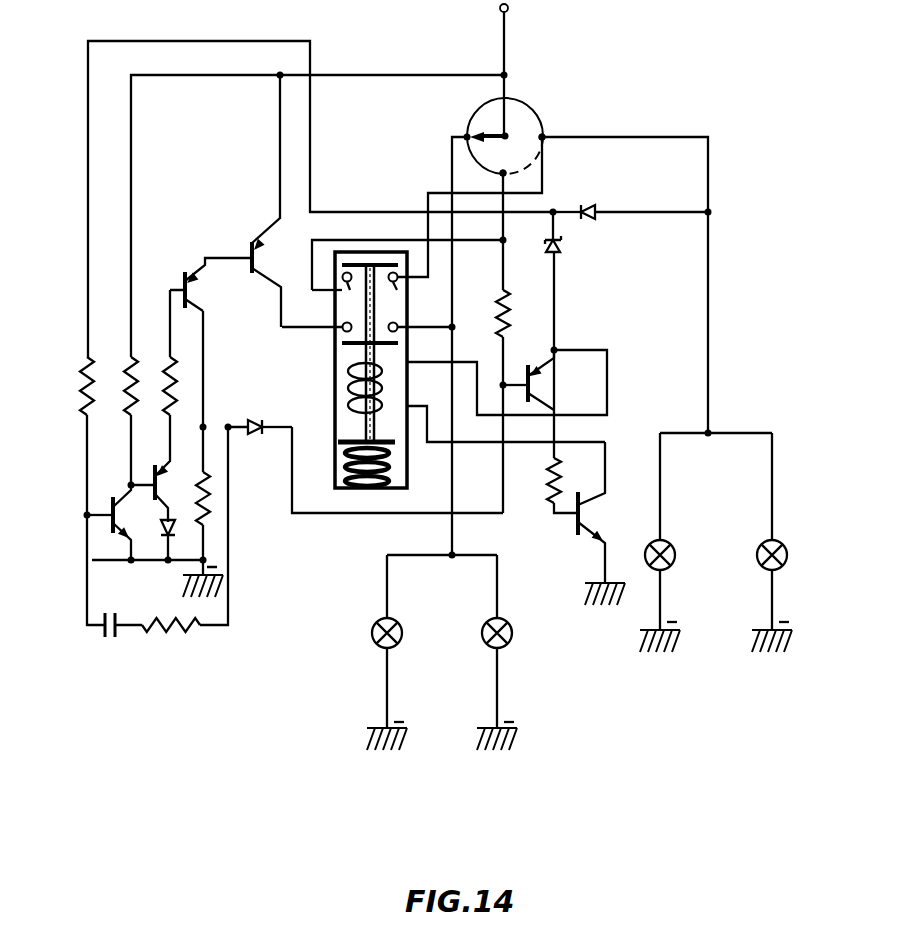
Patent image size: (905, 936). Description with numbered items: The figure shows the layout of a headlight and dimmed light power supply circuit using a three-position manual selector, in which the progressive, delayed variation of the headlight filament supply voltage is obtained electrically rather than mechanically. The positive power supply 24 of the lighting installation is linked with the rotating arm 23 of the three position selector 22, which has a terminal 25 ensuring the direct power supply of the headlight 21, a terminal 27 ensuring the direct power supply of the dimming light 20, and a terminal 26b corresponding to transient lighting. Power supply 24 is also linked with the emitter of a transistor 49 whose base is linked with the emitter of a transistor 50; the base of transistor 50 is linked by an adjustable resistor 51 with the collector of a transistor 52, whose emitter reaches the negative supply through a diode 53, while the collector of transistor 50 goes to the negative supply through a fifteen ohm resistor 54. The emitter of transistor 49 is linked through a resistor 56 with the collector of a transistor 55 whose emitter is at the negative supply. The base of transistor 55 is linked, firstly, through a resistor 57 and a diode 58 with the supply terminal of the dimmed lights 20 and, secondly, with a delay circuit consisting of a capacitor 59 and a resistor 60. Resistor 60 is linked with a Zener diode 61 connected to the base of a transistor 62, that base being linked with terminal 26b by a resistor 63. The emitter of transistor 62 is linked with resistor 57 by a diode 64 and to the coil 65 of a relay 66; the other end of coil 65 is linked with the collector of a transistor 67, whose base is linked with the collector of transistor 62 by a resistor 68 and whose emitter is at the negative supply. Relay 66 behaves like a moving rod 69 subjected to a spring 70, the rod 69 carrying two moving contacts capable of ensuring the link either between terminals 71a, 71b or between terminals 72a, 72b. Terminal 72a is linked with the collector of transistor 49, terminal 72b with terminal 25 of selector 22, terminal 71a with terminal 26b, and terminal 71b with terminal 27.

The dimming light 20 is at (760, 563).
The headlight 21 is at (484, 643).
The three position selector 22 is at (522, 103).
The rotating arm 23 is at (492, 118).
The positive power supply 24 is at (506, 42).
The terminal 25 is at (462, 132).
The terminal 26b is at (510, 172).
The terminal 27 is at (545, 137).
The transistor 49 is at (251, 246).
The transistor 50 is at (184, 276).
The adjustable resistor 51 is at (174, 372).
The transistor 52 is at (162, 466).
The diode 53 is at (162, 522).
The resistor 54 is at (222, 468).
The transistor 55 is at (112, 500).
The resistor 56 is at (150, 356).
The resistor 57 is at (104, 356).
The diode 58 is at (594, 208).
The capacitor 59 is at (120, 630).
The resistor 60 is at (192, 638).
The Zener diode 61 is at (270, 416).
The transistor 62 is at (530, 372).
The resistor 63 is at (506, 330).
The diode 64 is at (566, 244).
The coil 65 is at (346, 378).
The relay 66 is at (332, 484).
The transistor 67 is at (576, 526).
The resistor 68 is at (552, 478).
The moving rod 69 is at (367, 428).
The spring 70 is at (390, 478).
The terminal 71a is at (349, 292).
The terminal 71b is at (399, 291).
The terminal 72a is at (338, 333).
The terminal 72b is at (400, 333).